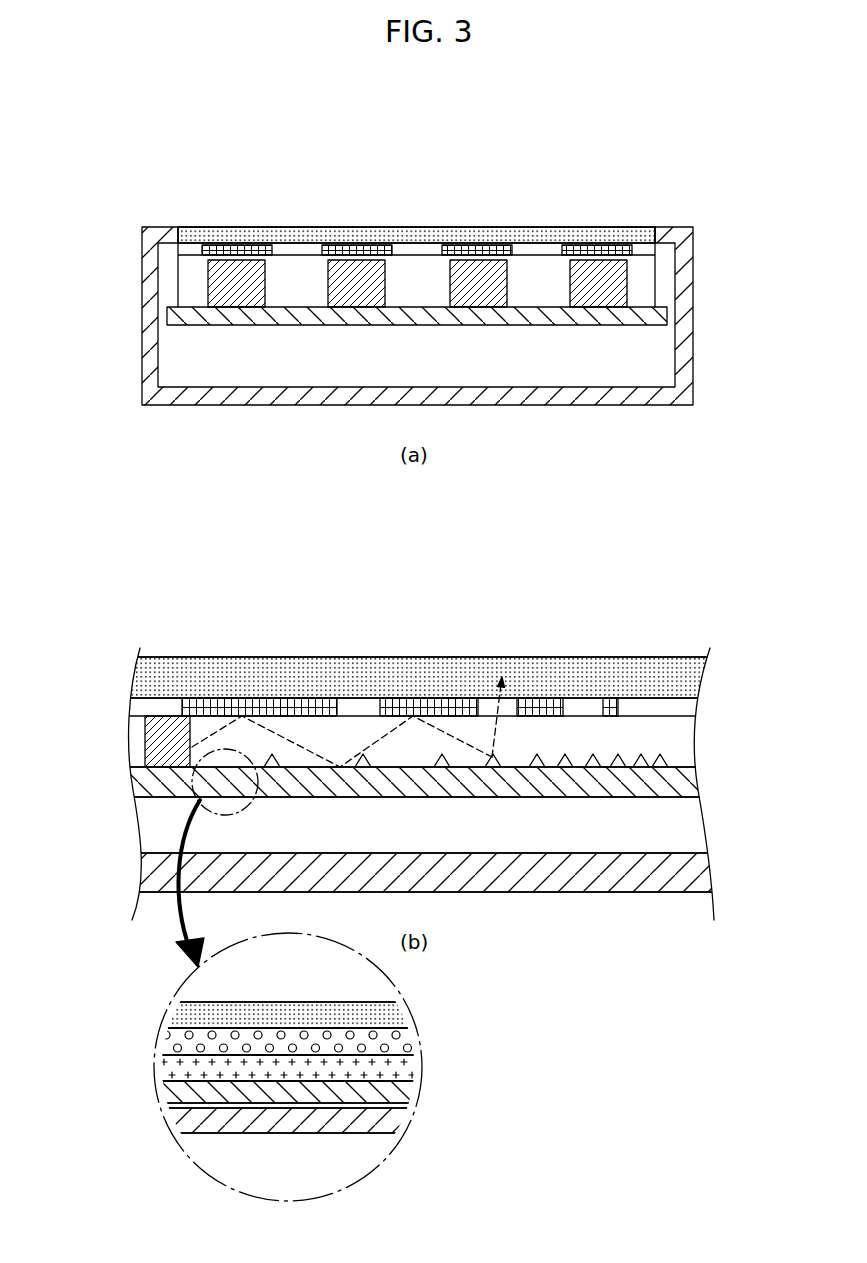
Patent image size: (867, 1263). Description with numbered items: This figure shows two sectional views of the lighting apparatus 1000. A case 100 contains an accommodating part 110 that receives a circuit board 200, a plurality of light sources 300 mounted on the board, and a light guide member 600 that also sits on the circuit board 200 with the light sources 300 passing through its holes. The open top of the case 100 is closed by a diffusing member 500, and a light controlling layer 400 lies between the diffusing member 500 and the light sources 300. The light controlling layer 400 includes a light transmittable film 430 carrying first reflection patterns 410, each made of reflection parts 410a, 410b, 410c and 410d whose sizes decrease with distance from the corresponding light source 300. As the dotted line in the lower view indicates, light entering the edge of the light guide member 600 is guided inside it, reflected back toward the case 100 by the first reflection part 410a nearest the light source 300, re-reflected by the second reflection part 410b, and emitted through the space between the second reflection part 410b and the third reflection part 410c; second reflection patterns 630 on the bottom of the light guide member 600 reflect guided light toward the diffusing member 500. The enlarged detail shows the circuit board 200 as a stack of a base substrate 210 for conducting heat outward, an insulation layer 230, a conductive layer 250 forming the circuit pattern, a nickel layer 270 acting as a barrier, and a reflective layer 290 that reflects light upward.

The lighting apparatus 1000 is at (150, 149).
The case 100 is at (686, 385).
The accommodating part 110 is at (620, 364).
The circuit board 200 is at (657, 313).
The base substrate 210 is at (400, 1118).
The insulation layer 230 is at (400, 1093).
The conductive layer 250 is at (400, 1068).
The nickel layer 270 is at (400, 1043).
The reflective layer 290 is at (400, 1017).
The light source 300 is at (620, 270).
The light controlling layer 400 is at (187, 258).
The first reflection pattern 410 is at (212, 245).
The first reflection part 410a is at (283, 700).
The second reflection part 410b is at (428, 700).
The third reflection part 410c is at (539, 700).
The fourth reflection part 410d is at (616, 700).
The light transmittable film 430 is at (186, 252).
The diffusing member 500 is at (597, 227).
The light guide member 600 is at (642, 287).
The second reflection pattern 630 is at (492, 767).